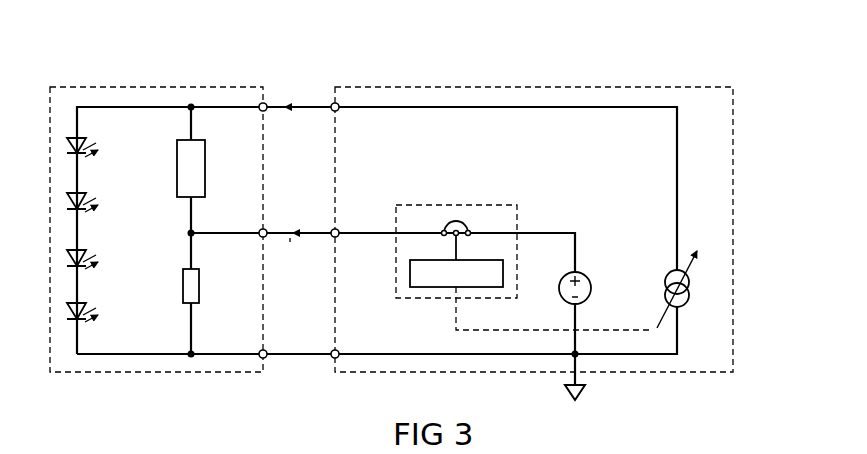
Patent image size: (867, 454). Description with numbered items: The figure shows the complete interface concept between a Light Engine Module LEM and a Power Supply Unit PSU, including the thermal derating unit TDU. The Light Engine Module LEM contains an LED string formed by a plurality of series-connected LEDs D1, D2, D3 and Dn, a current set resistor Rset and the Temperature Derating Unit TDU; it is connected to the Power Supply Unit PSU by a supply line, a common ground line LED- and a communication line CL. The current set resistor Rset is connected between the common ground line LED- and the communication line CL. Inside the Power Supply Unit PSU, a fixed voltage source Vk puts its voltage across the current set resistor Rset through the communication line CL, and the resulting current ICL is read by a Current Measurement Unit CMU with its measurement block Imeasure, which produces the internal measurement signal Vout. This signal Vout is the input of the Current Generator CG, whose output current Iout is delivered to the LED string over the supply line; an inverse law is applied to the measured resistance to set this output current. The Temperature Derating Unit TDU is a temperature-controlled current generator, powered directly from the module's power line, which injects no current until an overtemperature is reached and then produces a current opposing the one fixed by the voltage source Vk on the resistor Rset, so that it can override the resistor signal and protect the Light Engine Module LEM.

The Light Engine Module LEM is at (154, 86).
The Power Supply Unit PSU is at (502, 86).
The first LED D1 is at (89, 136).
The second LED D2 is at (89, 191).
The third LED D3 is at (90, 248).
The n-th LED Dn is at (91, 302).
The Temperature Derating Unit TDU is at (210, 168).
The current set resistor Rset is at (211, 286).
The common ground line LED- is at (303, 337).
The output current Iout is at (298, 119).
The communication line CL is at (310, 222).
The control line current ICL is at (300, 249).
The Current Measurement Unit CMU is at (493, 243).
The current measuring block Imeasure is at (456, 273).
The internal measurement signal Vout is at (532, 331).
The voltage source Vk is at (586, 283).
The Current Generator CG is at (689, 289).